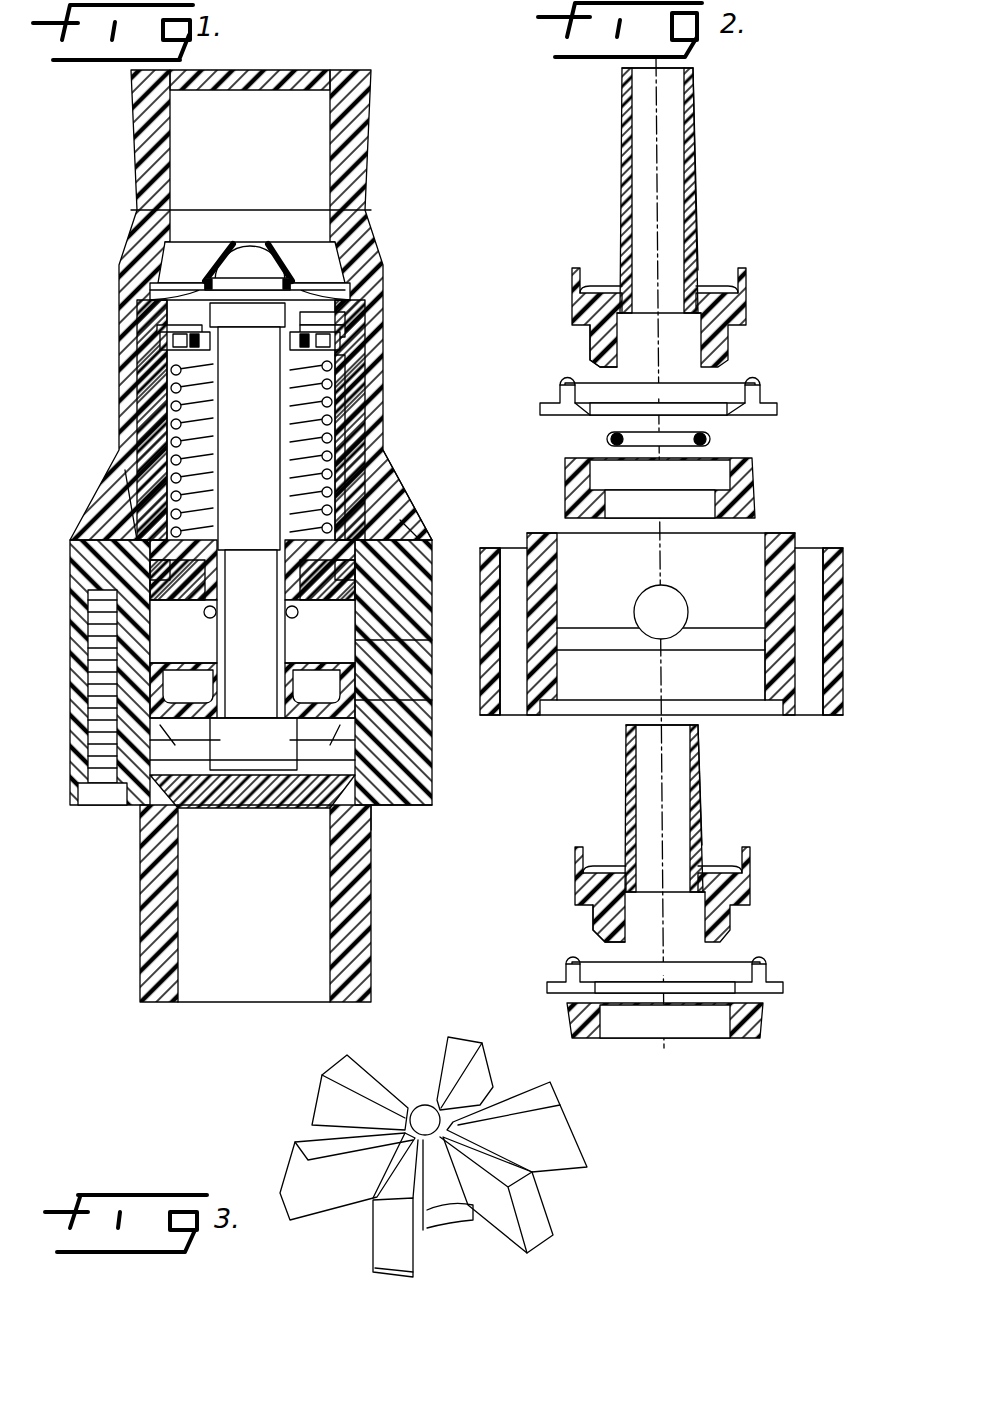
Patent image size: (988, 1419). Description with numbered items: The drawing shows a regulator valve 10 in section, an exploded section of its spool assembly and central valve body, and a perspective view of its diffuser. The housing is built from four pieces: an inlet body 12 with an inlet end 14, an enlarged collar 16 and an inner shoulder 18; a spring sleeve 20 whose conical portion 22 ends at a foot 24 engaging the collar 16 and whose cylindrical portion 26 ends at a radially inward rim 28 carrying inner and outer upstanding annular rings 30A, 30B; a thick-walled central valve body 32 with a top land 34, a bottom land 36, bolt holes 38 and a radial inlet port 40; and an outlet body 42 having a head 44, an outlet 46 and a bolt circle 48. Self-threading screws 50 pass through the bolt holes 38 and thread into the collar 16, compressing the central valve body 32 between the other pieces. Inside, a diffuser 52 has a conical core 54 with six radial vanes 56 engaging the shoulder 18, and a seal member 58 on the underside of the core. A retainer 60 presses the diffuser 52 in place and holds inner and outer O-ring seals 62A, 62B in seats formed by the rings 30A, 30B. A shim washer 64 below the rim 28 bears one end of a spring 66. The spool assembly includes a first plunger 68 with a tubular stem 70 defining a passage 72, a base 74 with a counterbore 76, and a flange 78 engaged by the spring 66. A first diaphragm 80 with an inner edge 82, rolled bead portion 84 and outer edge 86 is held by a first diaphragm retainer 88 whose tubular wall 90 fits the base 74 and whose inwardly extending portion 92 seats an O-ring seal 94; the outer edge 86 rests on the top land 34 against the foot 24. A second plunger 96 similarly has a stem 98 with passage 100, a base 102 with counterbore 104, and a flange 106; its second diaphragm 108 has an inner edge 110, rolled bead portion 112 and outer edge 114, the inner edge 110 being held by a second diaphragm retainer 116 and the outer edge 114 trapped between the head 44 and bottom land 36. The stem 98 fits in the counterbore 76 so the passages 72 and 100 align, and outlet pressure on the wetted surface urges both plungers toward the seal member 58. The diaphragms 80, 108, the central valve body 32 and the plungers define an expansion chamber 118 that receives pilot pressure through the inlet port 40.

In FIG. 1, the regulator valve 10 is at (108, 428).
In FIG. 1, the inlet body 12 is at (372, 186).
In FIG. 1, the inlet end 14 is at (318, 80).
In FIG. 1, the collar 16 is at (410, 558).
In FIG. 1, the shoulder 18 is at (165, 250).
In FIG. 1, the spring sleeve 20 is at (392, 490).
In FIG. 1, the conical portion 22 is at (170, 520).
In FIG. 1, the foot 24 is at (420, 528).
In FIG. 1, the cylindrical portion 26 is at (345, 420).
In FIG. 1, the rim 28 is at (340, 345).
In FIG. 1, the inner upstanding annular ring 30A is at (168, 333).
In FIG. 1, the outer upstanding annular ring 30B is at (165, 348).
In FIG. 1, the central valve body 32 is at (432, 730).
In FIG. 2, the central valve body 32 is at (850, 555).
In FIG. 2, the top land 34 is at (782, 545).
In FIG. 2, the bottom land 36 is at (765, 705).
In FIG. 2, the bolt holes 38 is at (505, 715).
In FIG. 1, the radial inlet port 40 is at (418, 720).
In FIG. 2, the radial inlet port 40 is at (683, 595).
In FIG. 1, the outlet body 42 is at (373, 920).
In FIG. 1, the head 44 is at (115, 800).
In FIG. 1, the outlet 46 is at (238, 990).
In FIG. 1, the bolt circle 48 is at (405, 800).
In FIG. 1, the self-threading screw 50 is at (100, 800).
In FIG. 1, the diffuser 52 is at (292, 240).
In FIG. 3, the diffuser 52 is at (290, 1128).
In FIG. 1, the conical core 54 is at (255, 247).
In FIG. 3, the conical core 54 is at (443, 1198).
In FIG. 1, the radial vanes 56 is at (175, 272).
In FIG. 3, the radial vanes 56 is at (450, 1050).
In FIG. 1, the seal member 58 is at (158, 292).
In FIG. 1, the retainer 60 is at (350, 290).
In FIG. 1, the inner O-ring seal 62A is at (355, 310).
In FIG. 1, the outer O-ring seal 62B is at (350, 325).
In FIG. 1, the shim washer 64 is at (355, 370).
In FIG. 1, the spring 66 is at (320, 470).
In FIG. 1, the first plunger 68 is at (150, 478).
In FIG. 2, the first plunger 68 is at (608, 150).
In FIG. 2, the tubular stem 70 is at (700, 155).
In FIG. 2, the passage 72 is at (680, 108).
In FIG. 2, the base 74 is at (598, 340).
In FIG. 2, the counterbore 76 is at (700, 360).
In FIG. 2, the flange 78 is at (748, 312).
In FIG. 1, the first diaphragm 80 is at (385, 600).
In FIG. 2, the first diaphragm 80 is at (553, 391).
In FIG. 2, the inner edge 82 is at (725, 415).
In FIG. 2, the rolled bead portion 84 is at (755, 395).
In FIG. 2, the outer edge 86 is at (780, 410).
In FIG. 1, the first diaphragm retainer 88 is at (340, 605).
In FIG. 2, the first diaphragm retainer 88 is at (553, 472).
In FIG. 2, the tubular wall 90 is at (750, 470).
In FIG. 2, the inwardly extending portion 92 is at (575, 498).
In FIG. 1, the O-ring seal 94 is at (295, 605).
In FIG. 2, the O-ring seal 94 is at (613, 440).
In FIG. 1, the second plunger 96 is at (300, 770).
In FIG. 2, the second plunger 96 is at (714, 824).
In FIG. 2, the tubular stem 98 is at (700, 778).
In FIG. 2, the passage 100 is at (650, 765).
In FIG. 2, the base 102 is at (725, 915).
In FIG. 2, the counterbore 104 is at (700, 940).
In FIG. 2, the flange 106 is at (745, 880).
In FIG. 1, the second diaphragm 108 is at (395, 768).
In FIG. 2, the second diaphragm 108 is at (784, 983).
In FIG. 2, the inner edge 110 is at (735, 990).
In FIG. 2, the rolled bead portion 112 is at (573, 960).
In FIG. 2, the outer edge 114 is at (547, 985).
In FIG. 1, the second diaphragm retainer 116 is at (165, 765).
In FIG. 2, the second diaphragm retainer 116 is at (740, 1038).
In FIG. 1, the expansion chamber 118 is at (252, 629).